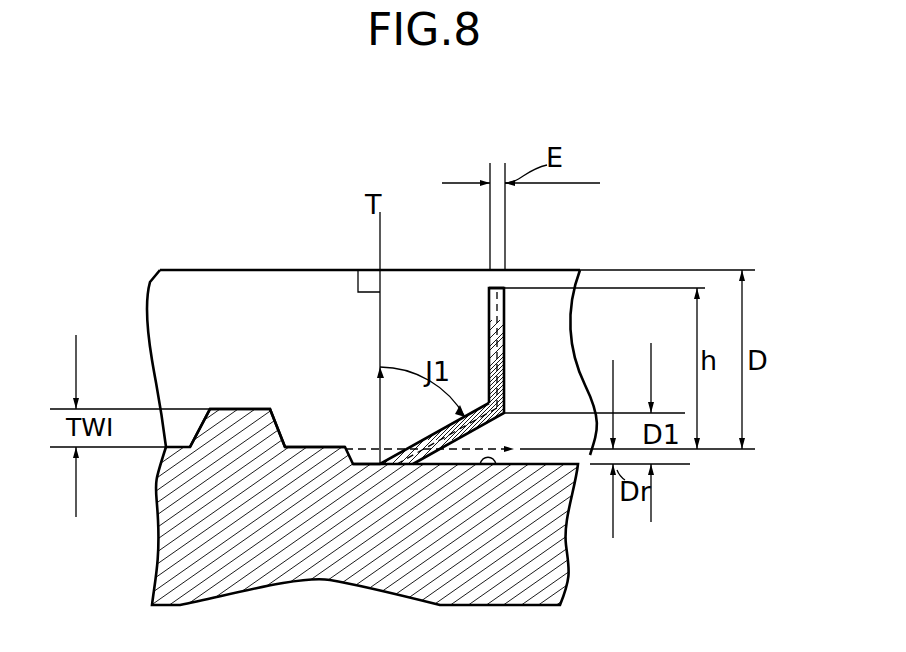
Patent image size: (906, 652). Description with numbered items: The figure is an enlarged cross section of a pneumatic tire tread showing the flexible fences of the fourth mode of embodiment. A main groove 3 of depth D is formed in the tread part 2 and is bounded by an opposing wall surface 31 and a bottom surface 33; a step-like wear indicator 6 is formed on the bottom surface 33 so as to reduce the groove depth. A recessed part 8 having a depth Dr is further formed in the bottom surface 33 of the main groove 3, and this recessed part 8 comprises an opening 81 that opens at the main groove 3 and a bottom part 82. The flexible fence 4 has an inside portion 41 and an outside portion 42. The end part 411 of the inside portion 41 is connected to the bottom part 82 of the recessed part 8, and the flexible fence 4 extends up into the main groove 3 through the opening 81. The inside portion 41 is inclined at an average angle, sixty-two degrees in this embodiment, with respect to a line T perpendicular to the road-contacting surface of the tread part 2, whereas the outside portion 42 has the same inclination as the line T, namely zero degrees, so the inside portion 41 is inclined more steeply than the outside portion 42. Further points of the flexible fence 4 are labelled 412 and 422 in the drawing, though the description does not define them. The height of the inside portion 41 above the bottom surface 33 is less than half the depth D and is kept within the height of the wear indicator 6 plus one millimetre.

The tread part 2 is at (238, 264).
The main groove 3 is at (178, 306).
The wall surface 31 is at (229, 375).
The bottom surface 33 is at (303, 445).
The flexible fence 4 is at (489, 315).
The inside portion 41 is at (473, 437).
The end part (first end point) 411 is at (357, 391).
The corner portion 412 is at (490, 425).
The outside portion 42 is at (505, 305).
The top end of second coating portion 422 is at (500, 290).
The wear indicator 6 is at (208, 412).
The recessed part 8 is at (356, 462).
The opening 81 is at (512, 452).
The bottom part 82 is at (492, 465).